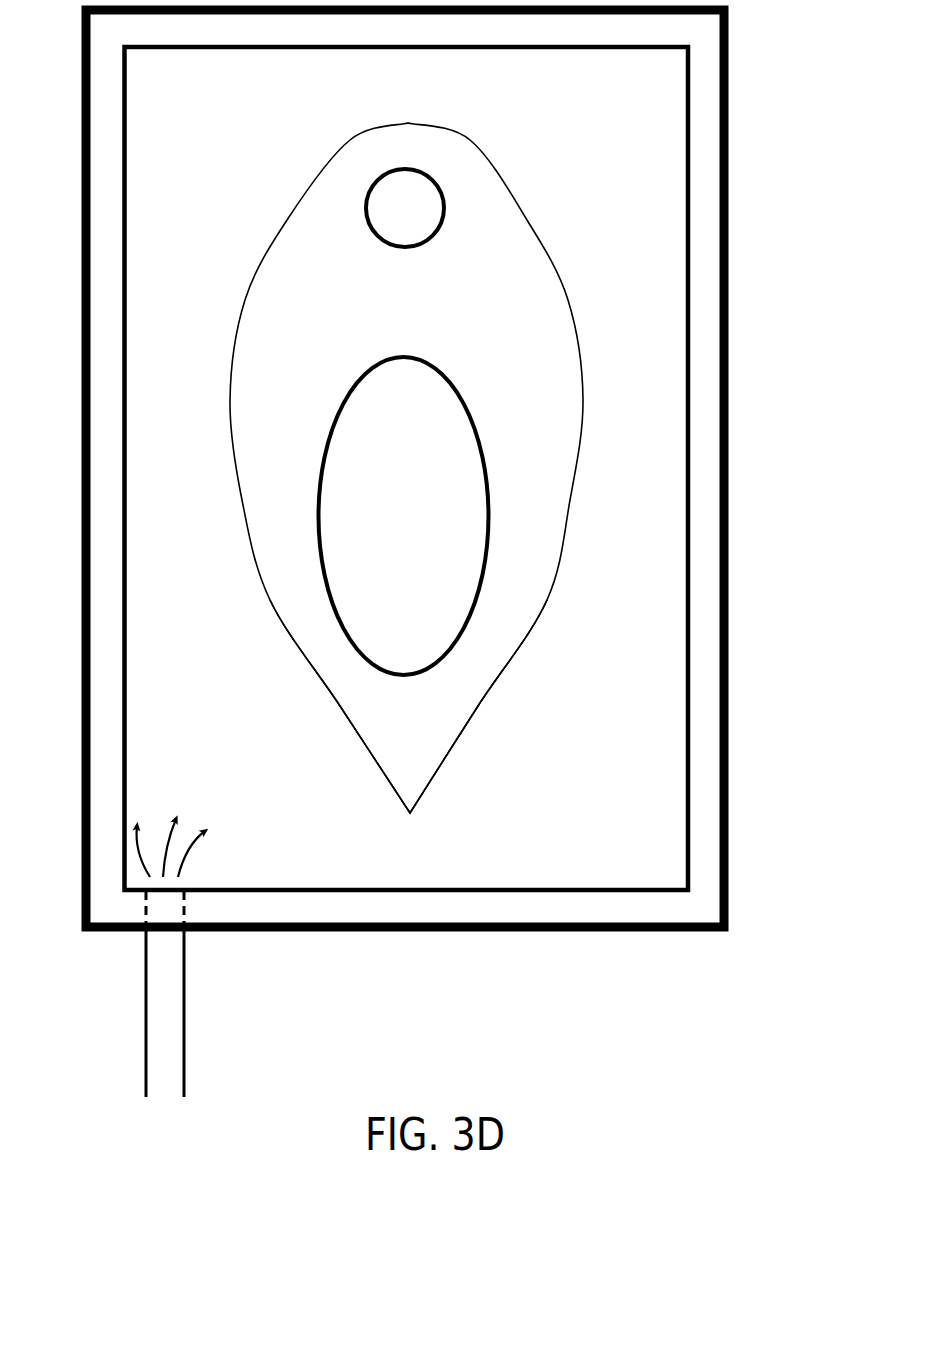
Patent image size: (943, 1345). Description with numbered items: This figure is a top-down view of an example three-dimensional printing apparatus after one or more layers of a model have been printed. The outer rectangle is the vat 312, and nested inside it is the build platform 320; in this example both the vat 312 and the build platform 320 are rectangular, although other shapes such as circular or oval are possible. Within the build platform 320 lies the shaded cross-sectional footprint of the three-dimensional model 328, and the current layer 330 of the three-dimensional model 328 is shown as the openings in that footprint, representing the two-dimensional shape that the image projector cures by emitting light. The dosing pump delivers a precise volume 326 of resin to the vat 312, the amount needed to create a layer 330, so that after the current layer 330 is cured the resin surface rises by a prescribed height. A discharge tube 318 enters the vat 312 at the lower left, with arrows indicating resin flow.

The vat 312 is at (728, 100).
The build platform 320 is at (690, 752).
The volume of resin 326 is at (535, 137).
The three-dimensional model 328 is at (393, 712).
The layer 330 is at (403, 218).
The discharge tube 318 is at (143, 1022).